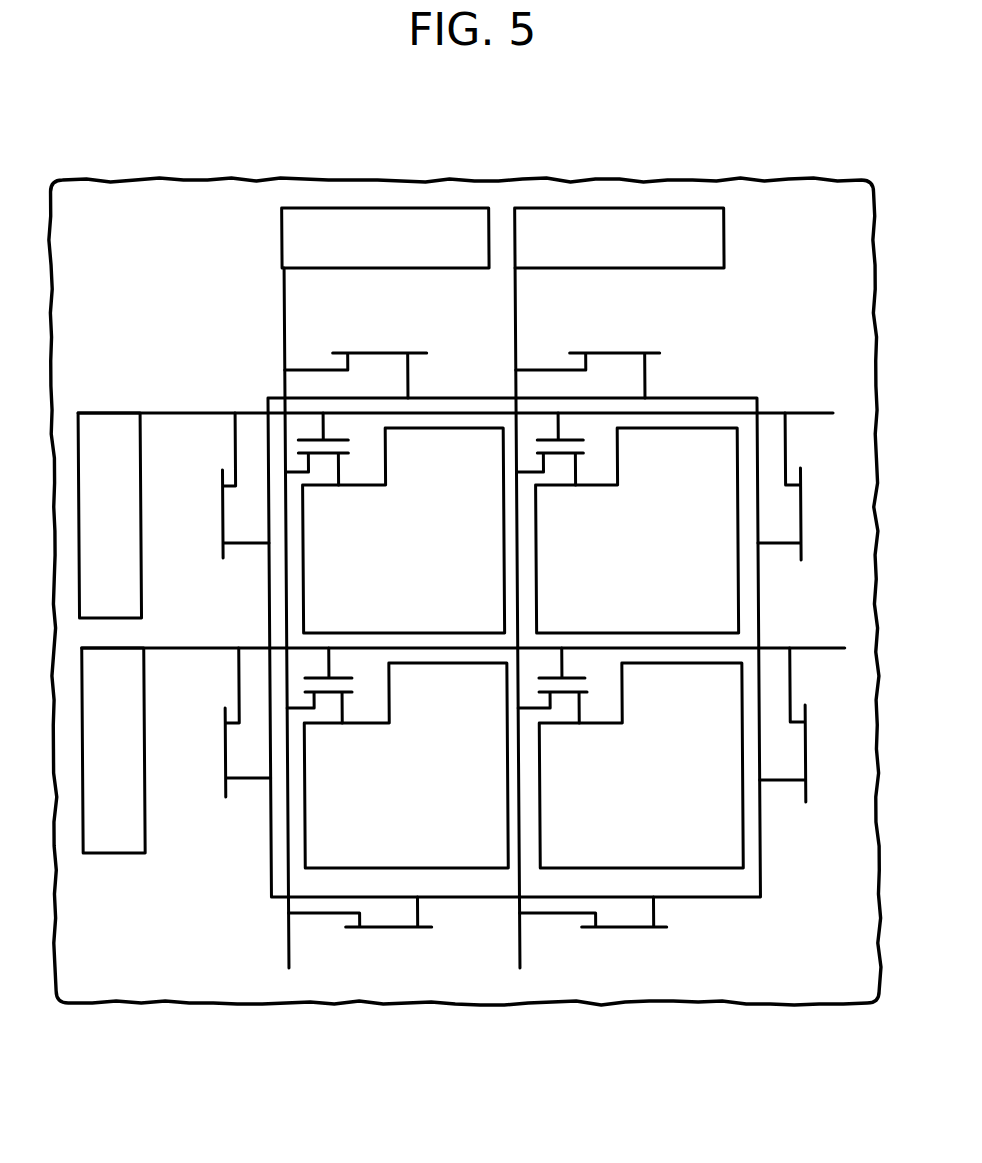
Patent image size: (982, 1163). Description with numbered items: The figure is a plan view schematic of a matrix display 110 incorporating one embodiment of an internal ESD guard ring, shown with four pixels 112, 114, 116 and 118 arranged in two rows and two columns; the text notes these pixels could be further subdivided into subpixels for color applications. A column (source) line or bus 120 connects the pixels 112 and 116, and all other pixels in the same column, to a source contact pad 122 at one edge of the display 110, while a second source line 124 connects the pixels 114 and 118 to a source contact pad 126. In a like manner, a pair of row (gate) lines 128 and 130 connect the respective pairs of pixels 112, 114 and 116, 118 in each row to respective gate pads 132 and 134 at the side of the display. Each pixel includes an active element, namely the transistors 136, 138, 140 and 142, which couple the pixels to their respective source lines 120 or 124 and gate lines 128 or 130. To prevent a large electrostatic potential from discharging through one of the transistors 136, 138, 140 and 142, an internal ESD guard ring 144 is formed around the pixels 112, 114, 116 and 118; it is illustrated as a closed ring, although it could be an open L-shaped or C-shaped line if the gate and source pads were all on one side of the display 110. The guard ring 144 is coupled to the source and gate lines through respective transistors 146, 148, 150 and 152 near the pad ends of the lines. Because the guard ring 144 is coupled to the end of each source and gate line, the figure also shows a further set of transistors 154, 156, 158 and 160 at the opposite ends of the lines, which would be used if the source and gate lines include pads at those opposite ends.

The matrix display 110 is at (575, 141).
The pixel 112 is at (378, 556).
The pixel 114 is at (620, 556).
The pixel 116 is at (378, 793).
The pixel 118 is at (612, 793).
The column (source) line 120 is at (285, 310).
The source contact pad 122 is at (360, 254).
The source line 124 is at (516, 313).
The source contact pad 126 is at (594, 254).
The row (gate) line 128 is at (187, 415).
The row (gate) line 130 is at (165, 650).
The gate pad 132 is at (85, 557).
The gate pad 134 is at (85, 794).
The transistor 136 is at (349, 450).
The transistor 138 is at (589, 459).
The transistor 140 is at (359, 690).
The transistor 142 is at (592, 688).
The internal ESD guard ring 144 is at (716, 396).
The transistor 146 is at (398, 354).
The transistor 148 is at (636, 354).
The transistor 150 is at (221, 527).
The transistor 152 is at (221, 762).
The transistor 154 is at (397, 928).
The transistor 156 is at (628, 928).
The transistor 158 is at (804, 502).
The transistor 160 is at (809, 729).